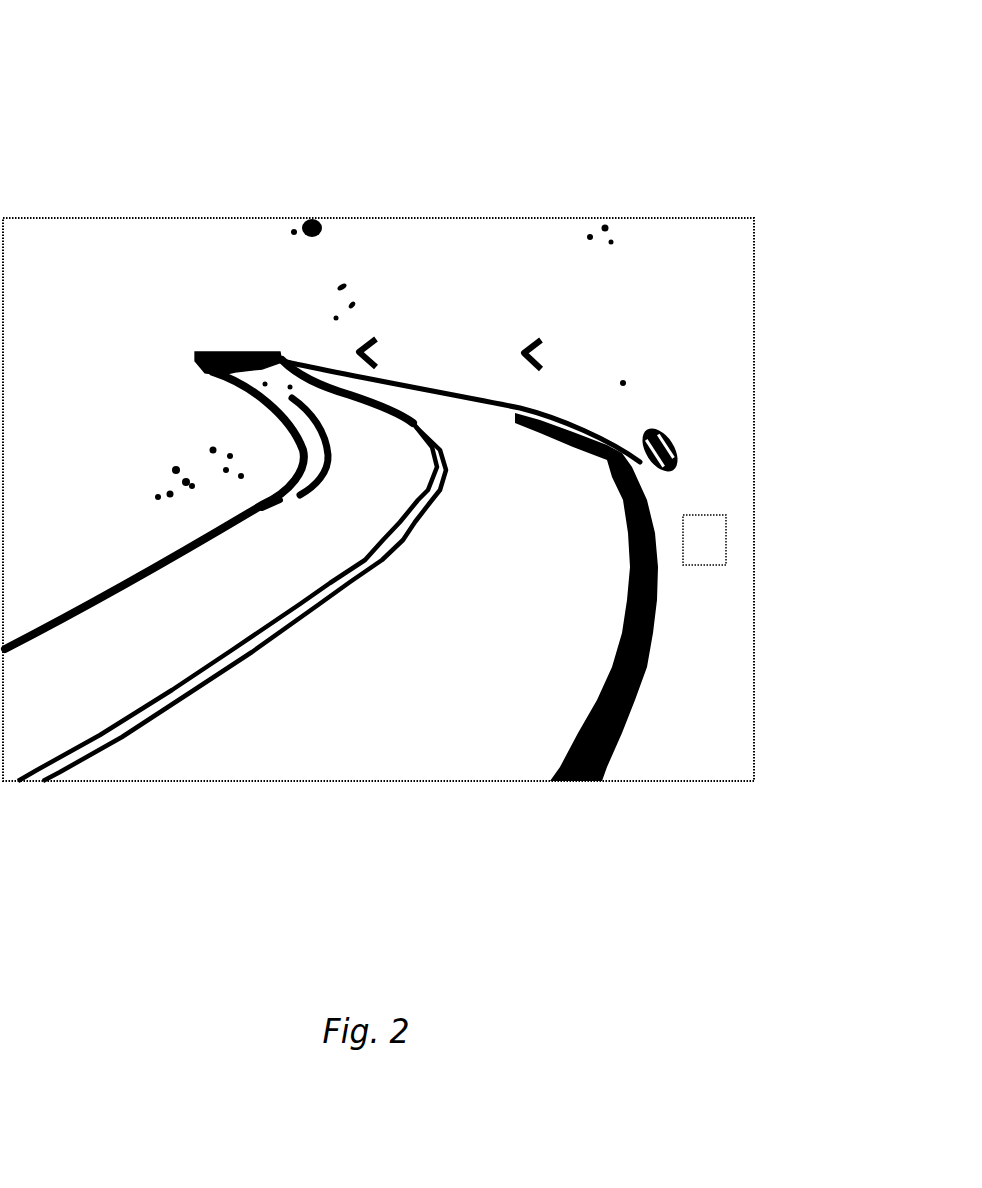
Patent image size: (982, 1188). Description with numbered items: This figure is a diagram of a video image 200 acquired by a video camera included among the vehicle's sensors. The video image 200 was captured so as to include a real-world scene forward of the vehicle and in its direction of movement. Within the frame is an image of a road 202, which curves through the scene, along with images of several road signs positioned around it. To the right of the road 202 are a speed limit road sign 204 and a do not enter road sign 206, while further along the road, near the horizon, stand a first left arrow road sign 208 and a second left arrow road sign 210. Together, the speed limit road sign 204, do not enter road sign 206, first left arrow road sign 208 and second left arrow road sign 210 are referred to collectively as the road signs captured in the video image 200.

The video image 200 is at (400, 43).
The road 202 is at (204, 860).
The speed limit road sign 204 is at (726, 530).
The do not enter road sign 206 is at (679, 443).
The first left arrow road sign 208 is at (538, 337).
The second left arrow road sign 210 is at (373, 337).